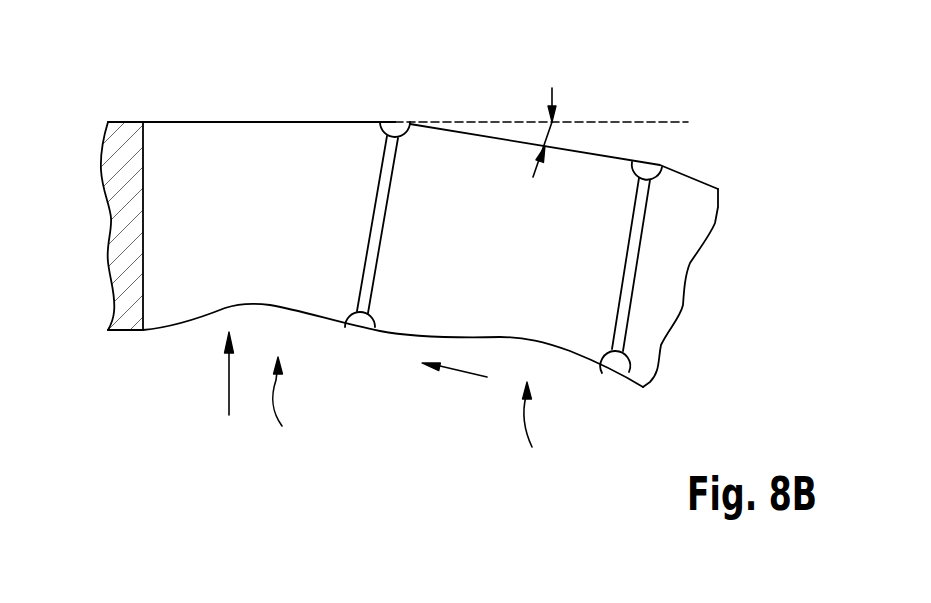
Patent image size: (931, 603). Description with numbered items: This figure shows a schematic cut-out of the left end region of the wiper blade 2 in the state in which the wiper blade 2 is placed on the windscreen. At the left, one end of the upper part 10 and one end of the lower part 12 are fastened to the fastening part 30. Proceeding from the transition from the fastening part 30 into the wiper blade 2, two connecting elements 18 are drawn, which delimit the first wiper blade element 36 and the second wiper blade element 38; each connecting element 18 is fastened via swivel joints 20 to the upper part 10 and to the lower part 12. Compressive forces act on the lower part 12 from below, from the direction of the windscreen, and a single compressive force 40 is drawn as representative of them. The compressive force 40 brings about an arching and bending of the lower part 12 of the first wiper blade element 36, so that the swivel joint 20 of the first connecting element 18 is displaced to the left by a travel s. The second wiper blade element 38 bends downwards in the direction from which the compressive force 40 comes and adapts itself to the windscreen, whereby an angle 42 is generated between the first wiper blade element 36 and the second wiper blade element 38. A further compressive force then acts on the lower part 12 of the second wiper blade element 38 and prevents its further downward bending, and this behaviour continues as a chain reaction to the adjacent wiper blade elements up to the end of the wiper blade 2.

The wiper blade 2 is at (698, 332).
The upper part 10 is at (257, 122).
The lower part 12 is at (262, 305).
The connecting element 18 is at (375, 235).
The swivel joint 20 is at (395, 122).
The fastening part 30 is at (122, 228).
The first wiper blade element 36 is at (280, 407).
The second wiper blade element 38 is at (528, 431).
The compressive force 40 is at (229, 383).
The angle 42 is at (549, 137).
The travel s is at (460, 377).